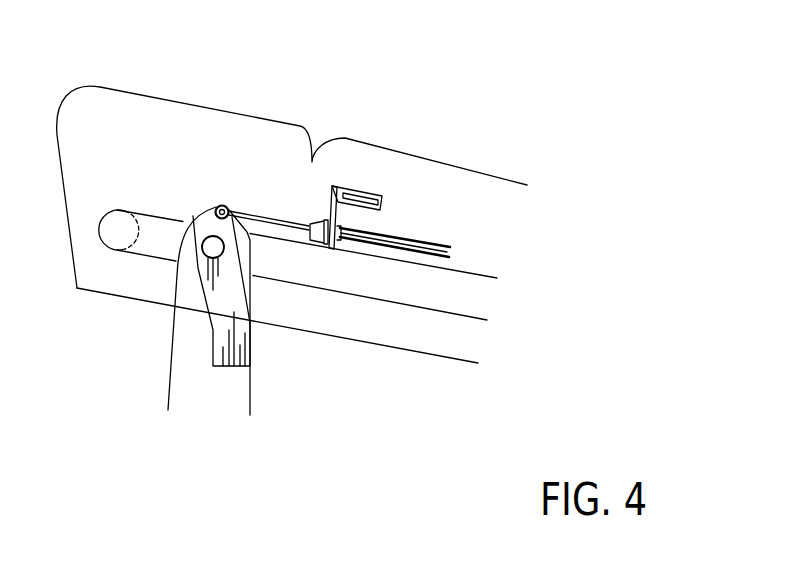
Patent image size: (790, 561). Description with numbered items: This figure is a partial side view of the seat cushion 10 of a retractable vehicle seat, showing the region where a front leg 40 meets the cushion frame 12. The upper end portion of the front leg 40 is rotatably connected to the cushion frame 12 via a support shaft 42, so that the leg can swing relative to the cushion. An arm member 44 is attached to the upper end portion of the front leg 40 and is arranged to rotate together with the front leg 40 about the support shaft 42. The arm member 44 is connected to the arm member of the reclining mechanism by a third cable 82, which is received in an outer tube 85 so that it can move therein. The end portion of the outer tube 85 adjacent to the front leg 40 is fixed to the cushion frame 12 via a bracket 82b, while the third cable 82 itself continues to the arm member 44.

The seat cushion 10 is at (213, 107).
The cushion frame 12 is at (403, 293).
The front leg 40 is at (187, 392).
The support shaft 42 is at (207, 252).
The arm member 44 is at (212, 227).
The third cable 82 is at (260, 214).
The bracket 82b is at (352, 187).
The outer tube 85 is at (388, 232).